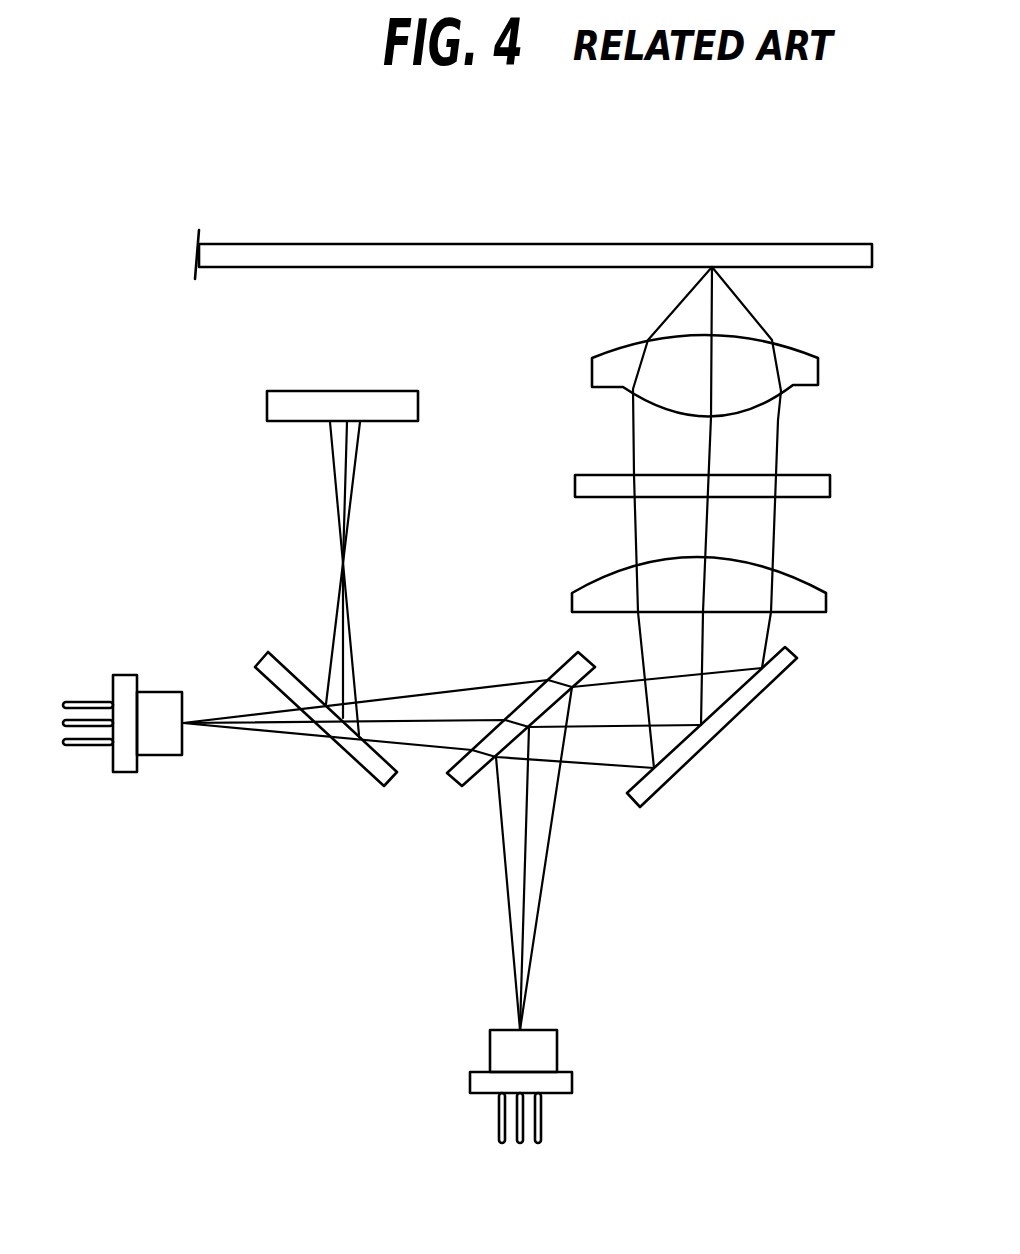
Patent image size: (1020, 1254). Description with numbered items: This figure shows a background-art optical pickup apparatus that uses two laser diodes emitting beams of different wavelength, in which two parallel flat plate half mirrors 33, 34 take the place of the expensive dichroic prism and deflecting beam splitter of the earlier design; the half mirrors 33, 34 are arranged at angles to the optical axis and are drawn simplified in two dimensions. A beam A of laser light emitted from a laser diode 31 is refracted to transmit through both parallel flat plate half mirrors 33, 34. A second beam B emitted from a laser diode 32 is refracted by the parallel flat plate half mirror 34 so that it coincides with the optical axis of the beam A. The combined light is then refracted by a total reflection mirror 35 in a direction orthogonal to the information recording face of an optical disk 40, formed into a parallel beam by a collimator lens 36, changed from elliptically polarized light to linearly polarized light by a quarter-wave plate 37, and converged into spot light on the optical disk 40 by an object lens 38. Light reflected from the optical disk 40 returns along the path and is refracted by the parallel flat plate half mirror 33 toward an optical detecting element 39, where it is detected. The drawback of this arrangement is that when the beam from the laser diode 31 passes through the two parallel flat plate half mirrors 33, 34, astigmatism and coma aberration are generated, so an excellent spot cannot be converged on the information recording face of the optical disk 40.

The laser diode 31 is at (125, 675).
The laser diode 32 is at (470, 1080).
The parallel flat plate half mirror 33 is at (265, 652).
The parallel flat plate half mirror 34 is at (450, 779).
The total reflection mirror 35 is at (722, 738).
The collimator lens 36 is at (823, 597).
The quarter-wave plate 37 is at (820, 475).
The object lens 38 is at (812, 355).
The optical detecting element 39 is at (266, 405).
The optical disk 40 is at (846, 245).
The beam of laser light A is at (273, 741).
The beam of laser light B is at (508, 912).